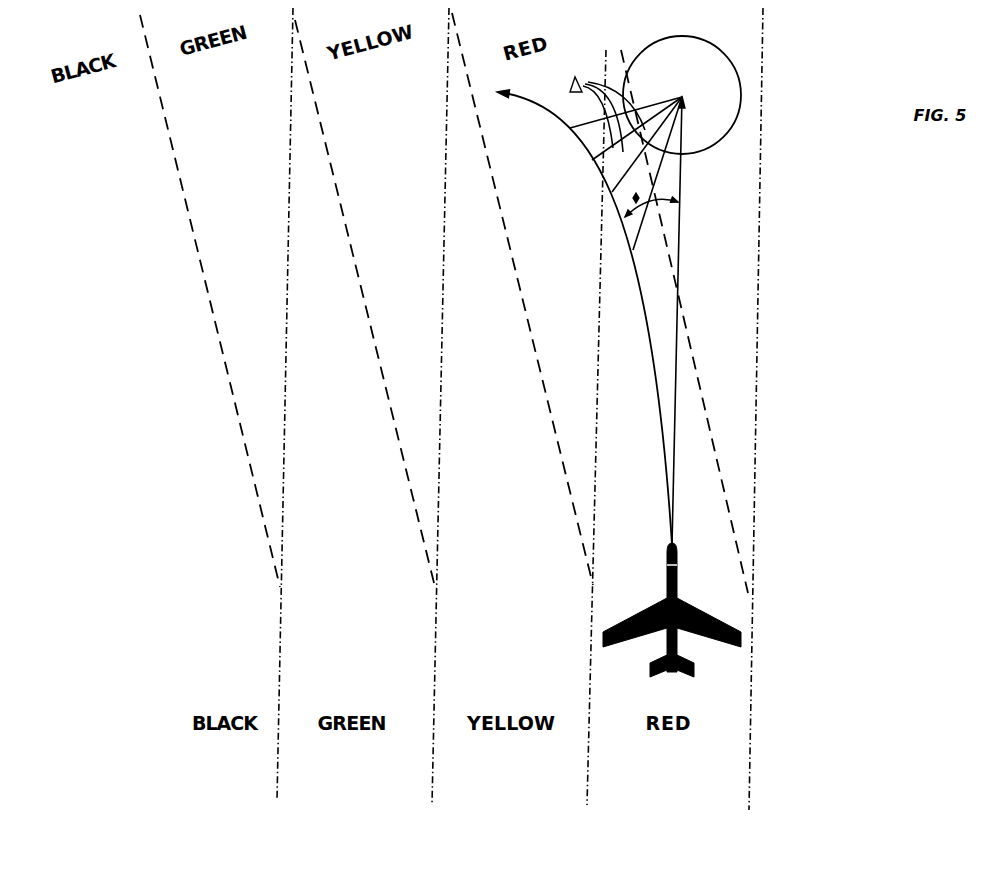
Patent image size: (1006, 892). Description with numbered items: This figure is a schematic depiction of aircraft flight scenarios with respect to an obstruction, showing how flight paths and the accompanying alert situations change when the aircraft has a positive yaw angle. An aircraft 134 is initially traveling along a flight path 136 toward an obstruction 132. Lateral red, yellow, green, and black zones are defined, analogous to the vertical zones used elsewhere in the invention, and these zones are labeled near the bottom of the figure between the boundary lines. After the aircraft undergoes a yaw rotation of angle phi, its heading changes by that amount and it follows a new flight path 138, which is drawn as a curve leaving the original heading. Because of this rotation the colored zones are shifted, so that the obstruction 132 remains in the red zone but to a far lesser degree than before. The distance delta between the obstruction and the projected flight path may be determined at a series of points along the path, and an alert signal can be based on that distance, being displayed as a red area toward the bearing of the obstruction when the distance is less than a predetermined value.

The obstruction 132 is at (741, 100).
The aircraft 134 is at (677, 573).
The flight path 136 is at (680, 228).
The flight path 138 is at (638, 272).